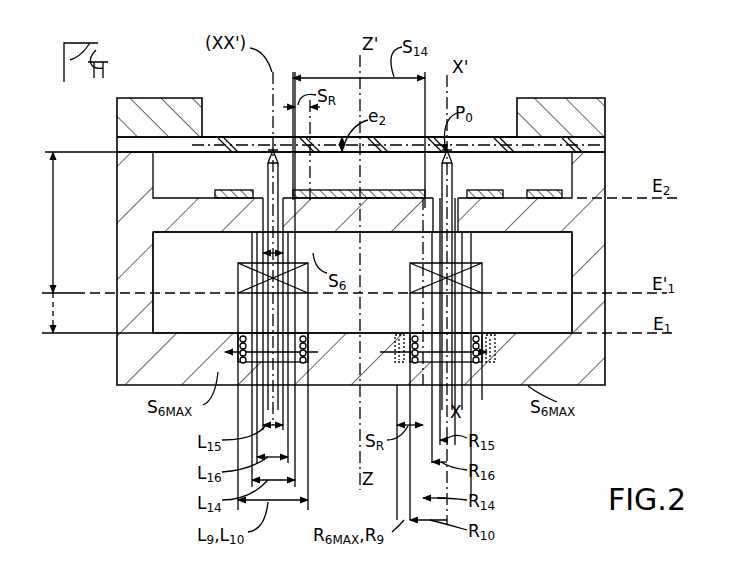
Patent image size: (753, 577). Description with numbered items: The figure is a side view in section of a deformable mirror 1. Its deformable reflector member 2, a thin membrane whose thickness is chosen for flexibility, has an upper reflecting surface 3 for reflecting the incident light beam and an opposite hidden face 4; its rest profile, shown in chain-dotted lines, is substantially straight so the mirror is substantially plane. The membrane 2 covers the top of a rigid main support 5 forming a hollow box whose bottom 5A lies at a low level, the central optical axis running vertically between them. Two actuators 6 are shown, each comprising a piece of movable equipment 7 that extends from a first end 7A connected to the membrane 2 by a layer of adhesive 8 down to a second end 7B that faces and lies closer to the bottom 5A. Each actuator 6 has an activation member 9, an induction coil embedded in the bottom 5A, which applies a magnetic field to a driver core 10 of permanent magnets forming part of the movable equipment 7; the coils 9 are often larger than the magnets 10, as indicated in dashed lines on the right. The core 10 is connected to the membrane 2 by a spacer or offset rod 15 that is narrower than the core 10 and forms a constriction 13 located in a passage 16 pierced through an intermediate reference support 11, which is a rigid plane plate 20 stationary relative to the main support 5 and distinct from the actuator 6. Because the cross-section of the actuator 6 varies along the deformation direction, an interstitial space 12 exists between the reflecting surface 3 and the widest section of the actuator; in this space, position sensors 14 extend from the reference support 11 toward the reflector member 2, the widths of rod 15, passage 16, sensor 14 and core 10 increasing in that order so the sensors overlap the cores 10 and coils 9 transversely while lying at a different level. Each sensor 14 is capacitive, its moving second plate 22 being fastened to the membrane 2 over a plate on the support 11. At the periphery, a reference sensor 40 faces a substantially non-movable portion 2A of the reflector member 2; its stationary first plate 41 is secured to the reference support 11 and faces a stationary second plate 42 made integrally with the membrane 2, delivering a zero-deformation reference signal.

The deformable mirror 1 is at (569, 70).
The deformable reflector member 2 is at (402, 138).
The substantially non-movable portion of the reflector member 2A is at (549, 144).
The reflecting surface 3 is at (390, 136).
The hidden face 4 is at (373, 154).
The main support 5 is at (595, 172).
The bottom of the box 5A is at (511, 380).
The actuator 6 is at (215, 287).
The movable equipment 7 is at (264, 241).
The first end of the movable equipment 7A is at (260, 155).
The second end of the movable equipment 7B is at (231, 299).
The layer of adhesive 8 is at (270, 151).
The activation member 9 is at (306, 364).
The driver core 10 is at (240, 277).
The intermediate reference support 11 is at (192, 215).
The interstitial space 12 is at (56, 215).
The constriction 13 is at (279, 218).
The position sensor 14 is at (250, 185).
The spacer 15 is at (258, 202).
The passage 16 is at (300, 204).
The plate 20 is at (372, 213).
The second plate 22 is at (229, 147).
The reference sensor 40 is at (548, 183).
The stationary first plate 41 is at (556, 191).
The stationary second plate 42 is at (535, 146).